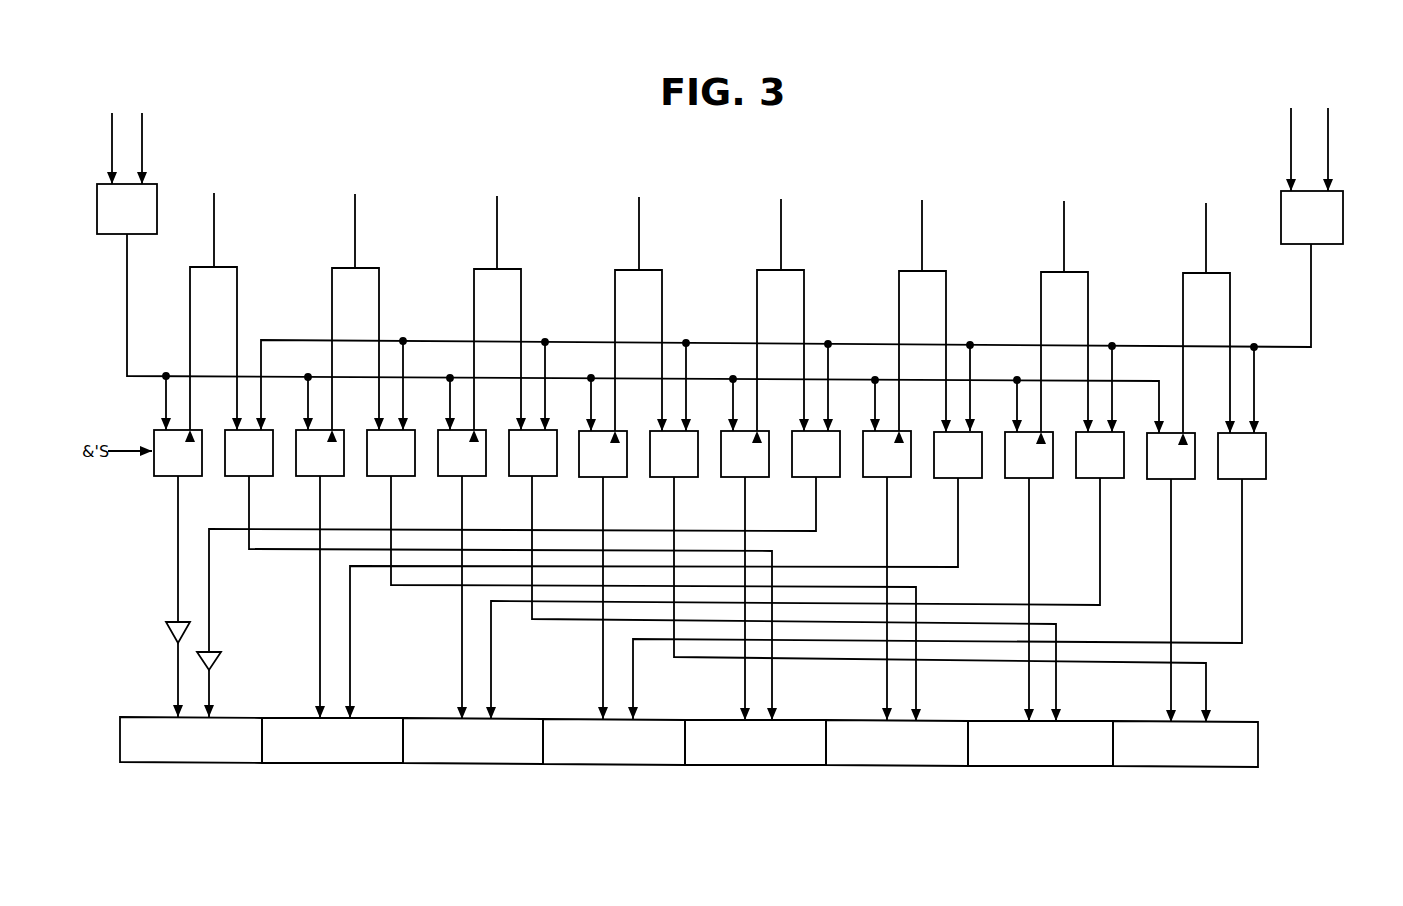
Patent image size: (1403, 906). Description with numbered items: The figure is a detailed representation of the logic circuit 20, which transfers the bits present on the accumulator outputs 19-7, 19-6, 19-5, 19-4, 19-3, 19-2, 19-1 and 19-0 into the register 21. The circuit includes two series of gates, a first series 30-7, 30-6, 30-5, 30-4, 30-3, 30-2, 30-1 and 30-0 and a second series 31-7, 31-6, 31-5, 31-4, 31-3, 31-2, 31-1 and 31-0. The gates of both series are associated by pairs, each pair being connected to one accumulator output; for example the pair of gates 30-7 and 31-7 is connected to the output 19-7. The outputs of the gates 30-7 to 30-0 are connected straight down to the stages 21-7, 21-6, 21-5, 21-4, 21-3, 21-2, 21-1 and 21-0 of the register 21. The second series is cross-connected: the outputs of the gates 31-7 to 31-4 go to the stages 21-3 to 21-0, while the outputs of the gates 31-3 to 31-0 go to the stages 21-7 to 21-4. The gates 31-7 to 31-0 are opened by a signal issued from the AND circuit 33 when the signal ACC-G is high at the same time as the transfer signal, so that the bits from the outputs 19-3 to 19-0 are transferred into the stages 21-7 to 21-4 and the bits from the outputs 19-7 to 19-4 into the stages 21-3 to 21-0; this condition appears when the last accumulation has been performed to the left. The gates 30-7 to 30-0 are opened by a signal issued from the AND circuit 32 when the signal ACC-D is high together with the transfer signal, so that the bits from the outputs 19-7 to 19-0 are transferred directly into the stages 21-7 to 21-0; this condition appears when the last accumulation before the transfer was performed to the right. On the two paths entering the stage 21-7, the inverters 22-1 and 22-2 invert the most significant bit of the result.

The logic circuit 20 is at (1287, 497).
The register 21 is at (722, 742).
The stage 21-7 is at (191, 740).
The stage 21-6 is at (332, 740).
The stage 21-5 is at (473, 741).
The stage 21-4 is at (614, 742).
The stage 21-3 is at (755, 742).
The stage 21-2 is at (897, 743).
The stage 21-1 is at (1040, 743).
The stage 21-0 is at (1185, 744).
The inverter 22-1 is at (148, 657).
The inverter 22-2 is at (228, 684).
The output 19-7 is at (227, 311).
The output 19-6 is at (369, 312).
The output 19-5 is at (511, 313).
The output 19-4 is at (652, 314).
The output 19-3 is at (794, 315).
The output 19-2 is at (936, 316).
The output 19-1 is at (1078, 316).
The output 19-0 is at (1220, 318).
The gate 30-7 is at (178, 526).
The gate 30-6 is at (320, 574).
The gate 30-5 is at (462, 574).
The gate 30-4 is at (603, 575).
The gate 30-3 is at (745, 575).
The gate 30-2 is at (887, 575).
The gate 30-1 is at (1029, 576).
The gate 30-0 is at (1171, 577).
The gate 31-7 is at (498, 575).
The gate 31-6 is at (641, 575).
The gate 31-5 is at (782, 575).
The gate 31-4 is at (928, 576).
The gate 31-3 is at (524, 541).
The gate 31-2 is at (666, 575).
The gate 31-1 is at (807, 575).
The gate 31-0 is at (949, 576).
The AND circuit 32 is at (103, 234).
The AND circuit 33 is at (1333, 241).